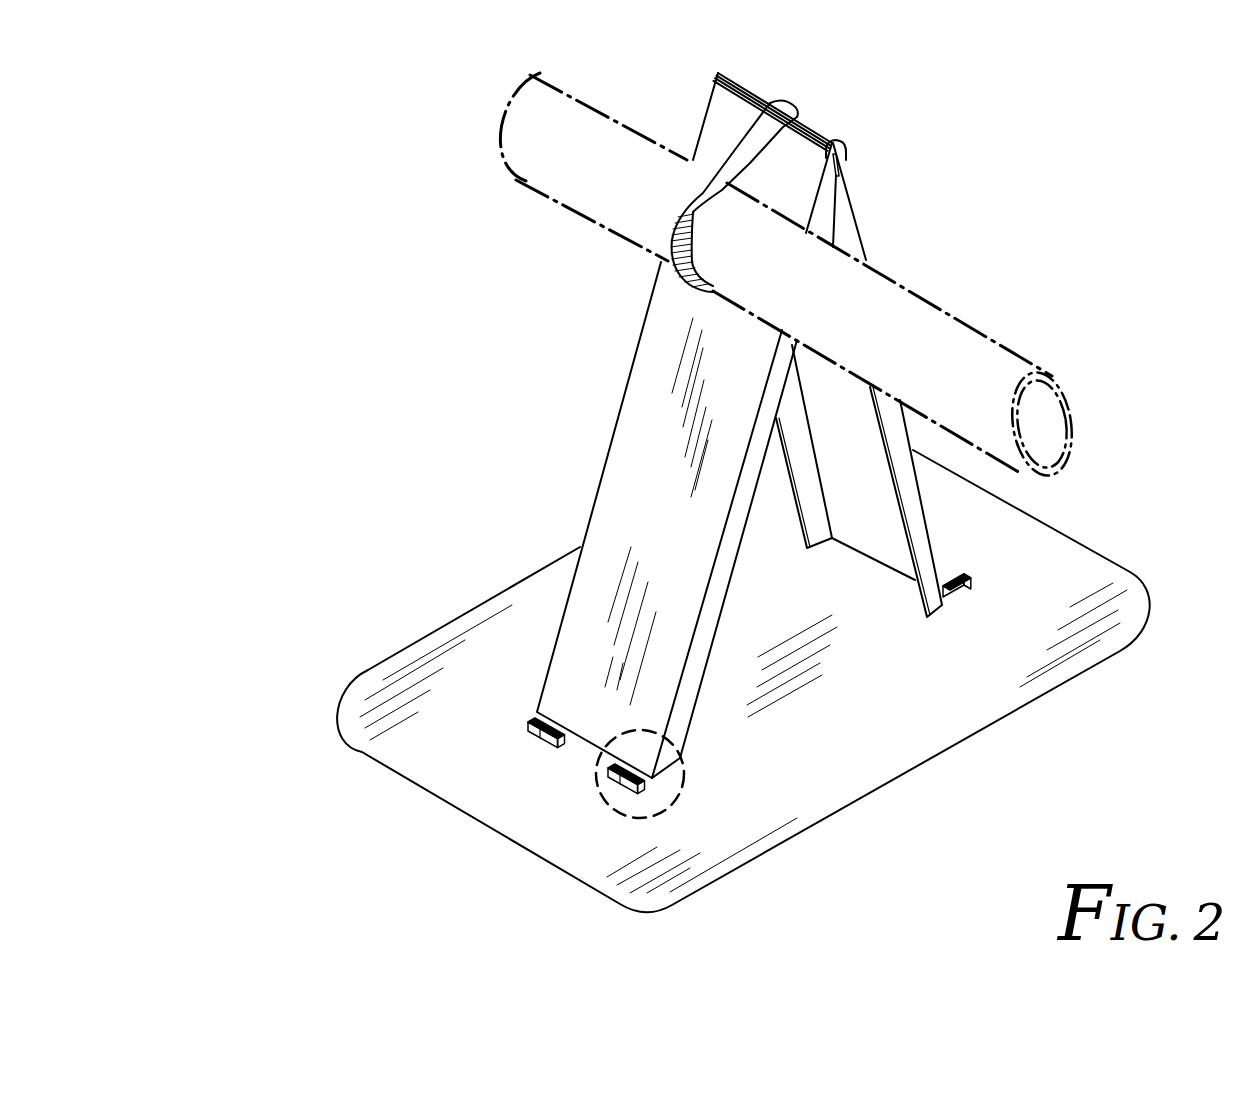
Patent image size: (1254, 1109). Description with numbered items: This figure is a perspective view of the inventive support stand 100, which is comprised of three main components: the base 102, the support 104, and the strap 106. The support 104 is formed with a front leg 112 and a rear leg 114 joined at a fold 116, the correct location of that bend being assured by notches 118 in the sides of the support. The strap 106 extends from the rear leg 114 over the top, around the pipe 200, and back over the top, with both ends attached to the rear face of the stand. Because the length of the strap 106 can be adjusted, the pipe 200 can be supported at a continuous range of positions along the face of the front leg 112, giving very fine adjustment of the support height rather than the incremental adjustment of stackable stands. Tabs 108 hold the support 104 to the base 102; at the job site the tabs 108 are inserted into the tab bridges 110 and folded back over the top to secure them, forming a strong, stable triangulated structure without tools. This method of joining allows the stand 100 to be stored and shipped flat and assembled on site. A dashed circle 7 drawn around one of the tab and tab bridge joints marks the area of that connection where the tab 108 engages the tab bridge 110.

The support stand 100 is at (677, 681).
The base 102 is at (735, 725).
The support 104 is at (669, 425).
The strap 106 is at (693, 173).
The tabs 108 is at (740, 690).
The tab bridges 110 is at (787, 735).
The front leg 112 is at (585, 511).
The rear leg 114 is at (885, 380).
The fold 116 is at (888, 111).
The notches 118 is at (905, 154).
The pipe 200 is at (736, 276).
The detail circle 7 is at (737, 817).